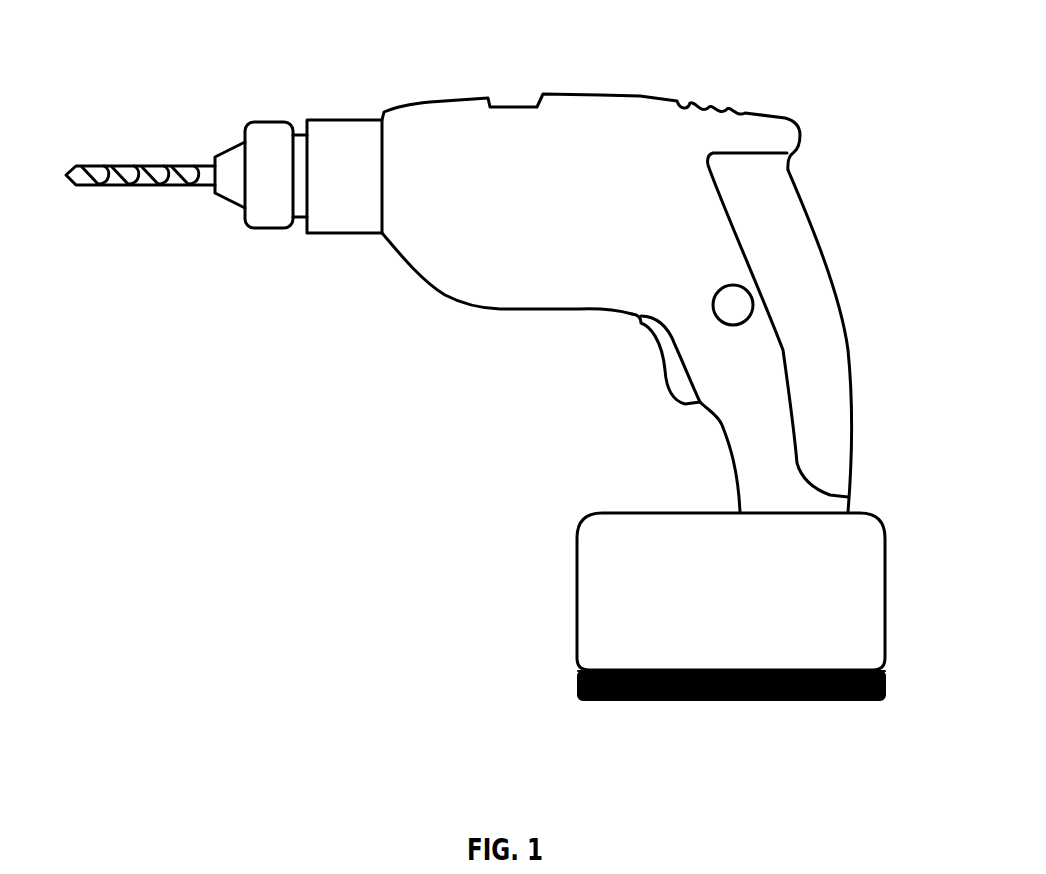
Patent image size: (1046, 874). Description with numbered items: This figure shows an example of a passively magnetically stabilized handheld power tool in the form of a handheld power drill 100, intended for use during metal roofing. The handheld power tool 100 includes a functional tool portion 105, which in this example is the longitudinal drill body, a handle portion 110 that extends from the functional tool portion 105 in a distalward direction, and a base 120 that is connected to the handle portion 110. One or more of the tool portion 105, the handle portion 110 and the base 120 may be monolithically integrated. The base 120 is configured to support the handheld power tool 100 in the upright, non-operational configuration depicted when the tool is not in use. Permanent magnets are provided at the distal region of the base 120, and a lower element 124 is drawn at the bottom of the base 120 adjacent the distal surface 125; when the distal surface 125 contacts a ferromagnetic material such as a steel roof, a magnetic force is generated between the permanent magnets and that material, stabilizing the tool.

The handheld power drill 100 is at (441, 327).
The functional tool portion 105 is at (582, 128).
The handle portion 110 is at (830, 403).
The base 120 is at (556, 563).
The base of battery pack 124 is at (578, 676).
The distal surface 125 is at (715, 700).